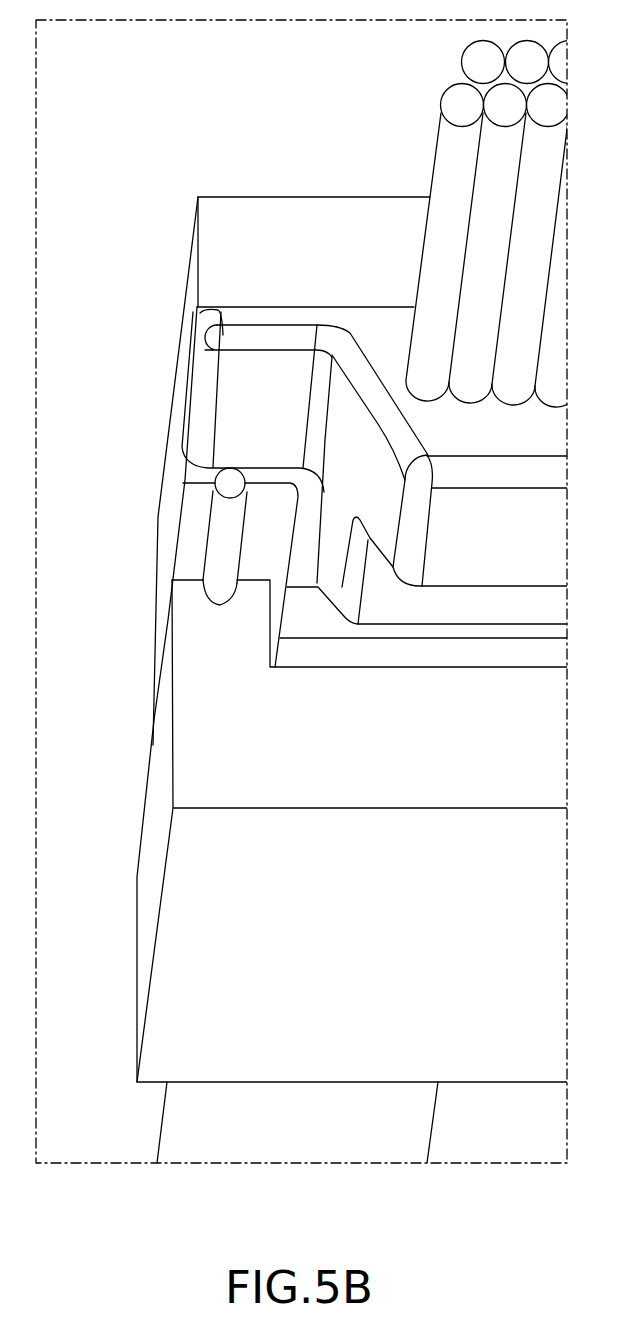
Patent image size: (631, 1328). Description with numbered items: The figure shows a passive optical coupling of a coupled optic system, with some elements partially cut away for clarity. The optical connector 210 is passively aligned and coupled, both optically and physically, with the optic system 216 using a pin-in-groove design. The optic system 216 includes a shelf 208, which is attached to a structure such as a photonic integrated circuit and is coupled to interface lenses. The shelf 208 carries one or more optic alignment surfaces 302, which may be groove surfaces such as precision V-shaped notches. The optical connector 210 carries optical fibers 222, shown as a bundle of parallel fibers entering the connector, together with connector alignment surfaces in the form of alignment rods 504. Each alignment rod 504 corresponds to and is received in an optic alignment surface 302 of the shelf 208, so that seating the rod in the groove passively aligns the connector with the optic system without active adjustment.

The optical connector 210 is at (148, 207).
The optical fibers 222 is at (448, 163).
The alignment rod 504 is at (218, 532).
The optic alignment surface 302 is at (213, 602).
The optic system 216 is at (127, 748).
The shelf 208 is at (178, 950).